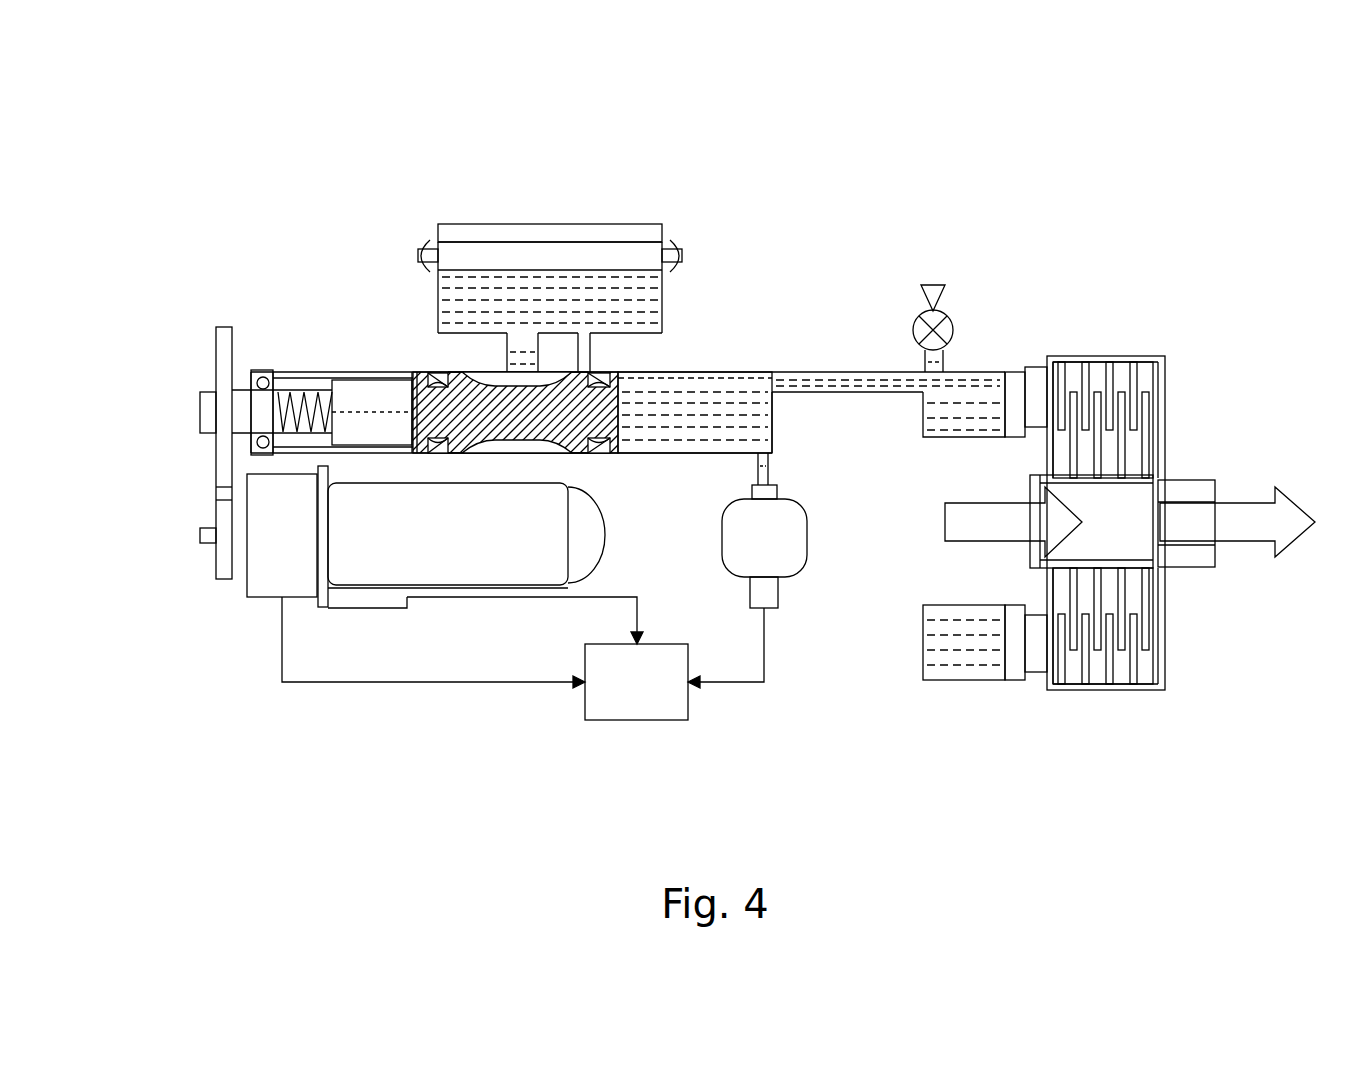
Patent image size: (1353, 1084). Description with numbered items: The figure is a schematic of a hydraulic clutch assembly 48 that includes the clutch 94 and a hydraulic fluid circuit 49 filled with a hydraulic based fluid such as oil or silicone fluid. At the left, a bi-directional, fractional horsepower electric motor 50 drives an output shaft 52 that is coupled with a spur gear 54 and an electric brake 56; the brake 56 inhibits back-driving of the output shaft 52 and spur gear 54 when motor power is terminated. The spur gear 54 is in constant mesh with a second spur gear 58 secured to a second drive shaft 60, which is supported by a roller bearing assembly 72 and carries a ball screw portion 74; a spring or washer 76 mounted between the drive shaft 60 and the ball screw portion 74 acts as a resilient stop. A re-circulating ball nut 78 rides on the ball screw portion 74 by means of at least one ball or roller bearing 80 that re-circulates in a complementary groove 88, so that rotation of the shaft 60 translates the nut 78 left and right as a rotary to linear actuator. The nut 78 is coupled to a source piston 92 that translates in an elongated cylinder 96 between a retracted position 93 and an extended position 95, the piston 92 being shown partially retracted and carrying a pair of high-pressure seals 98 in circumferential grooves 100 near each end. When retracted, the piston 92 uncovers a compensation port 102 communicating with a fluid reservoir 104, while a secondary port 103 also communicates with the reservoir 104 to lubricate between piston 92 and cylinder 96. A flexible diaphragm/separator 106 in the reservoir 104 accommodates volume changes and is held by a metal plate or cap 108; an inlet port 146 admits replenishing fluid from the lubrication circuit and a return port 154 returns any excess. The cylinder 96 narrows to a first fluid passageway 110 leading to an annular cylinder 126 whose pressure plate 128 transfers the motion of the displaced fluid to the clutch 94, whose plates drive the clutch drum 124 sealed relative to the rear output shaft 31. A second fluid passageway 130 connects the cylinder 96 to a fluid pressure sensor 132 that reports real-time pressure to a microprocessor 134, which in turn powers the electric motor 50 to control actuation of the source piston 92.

The rear output shaft 31 is at (1030, 490).
The hydraulic clutch assembly 48 is at (1018, 248).
The hydraulic fluid circuit 49 is at (452, 300).
The electric motor 50 is at (530, 585).
The output shaft 52 is at (205, 533).
The spur gear 54 is at (218, 510).
The electric brake 56 is at (270, 548).
The second spur gear 58 is at (215, 365).
The second drive shaft 60 is at (237, 415).
The roller bearing assembly 72 is at (337, 328).
The ball screw portion 74 is at (296, 395).
The spring or washer 76 is at (262, 372).
The re-circulating ball nut 78 is at (378, 392).
The ball or roller bearing 80 is at (365, 380).
The groove 88 is at (318, 372).
The source piston 92 is at (497, 430).
The retracted position 93 is at (353, 455).
The clutch 94 is at (1190, 391).
The extended position 95 is at (750, 435).
The elongated cylinder 96 is at (755, 442).
The high-pressure seals 98 is at (600, 450).
The circumferential grooves 100 is at (617, 432).
The compensation port 102 is at (597, 352).
The secondary port 103 is at (523, 350).
The fluid reservoir 104 is at (662, 287).
The flexible diaphragm/separator 106 is at (583, 255).
The metal plate or cap 108 is at (634, 232).
The first fluid passageway 110 is at (820, 372).
The clutch drum 124 is at (1090, 356).
The annular cylinder 126 is at (960, 400).
The pressure plate 128 is at (1015, 400).
The second fluid passageway 130 is at (770, 470).
The fluid pressure sensor 132 is at (810, 540).
The microprocessor 134 is at (612, 722).
The inlet port 146 is at (428, 250).
The return port 154 is at (668, 262).